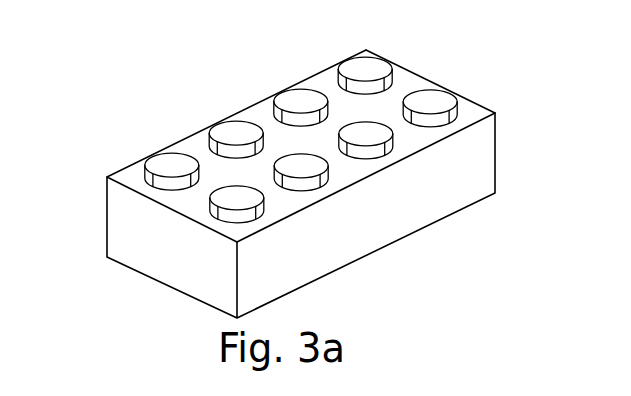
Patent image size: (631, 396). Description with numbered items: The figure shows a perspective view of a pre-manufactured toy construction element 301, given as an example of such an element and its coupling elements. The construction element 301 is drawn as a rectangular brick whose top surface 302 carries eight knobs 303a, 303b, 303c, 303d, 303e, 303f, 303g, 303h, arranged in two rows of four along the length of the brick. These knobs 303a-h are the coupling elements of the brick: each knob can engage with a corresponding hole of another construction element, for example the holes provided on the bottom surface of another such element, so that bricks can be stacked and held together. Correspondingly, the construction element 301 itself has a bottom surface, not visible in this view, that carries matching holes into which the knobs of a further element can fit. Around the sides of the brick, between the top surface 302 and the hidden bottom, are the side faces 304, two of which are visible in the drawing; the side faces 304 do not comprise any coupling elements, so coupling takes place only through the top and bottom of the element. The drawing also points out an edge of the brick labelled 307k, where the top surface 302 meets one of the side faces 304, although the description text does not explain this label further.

The construction element 301 is at (308, 169).
The top surface 302 is at (205, 168).
The knob 303a is at (165, 167).
The knob 303b is at (218, 132).
The knob 303c is at (302, 100).
The knob 303d is at (368, 68).
The knob 303e is at (248, 217).
The knob 303f is at (302, 168).
The knob 303g is at (368, 135).
The knob 303h is at (430, 100).
The side faces 304 is at (120, 247).
The top edge 307k is at (400, 64).